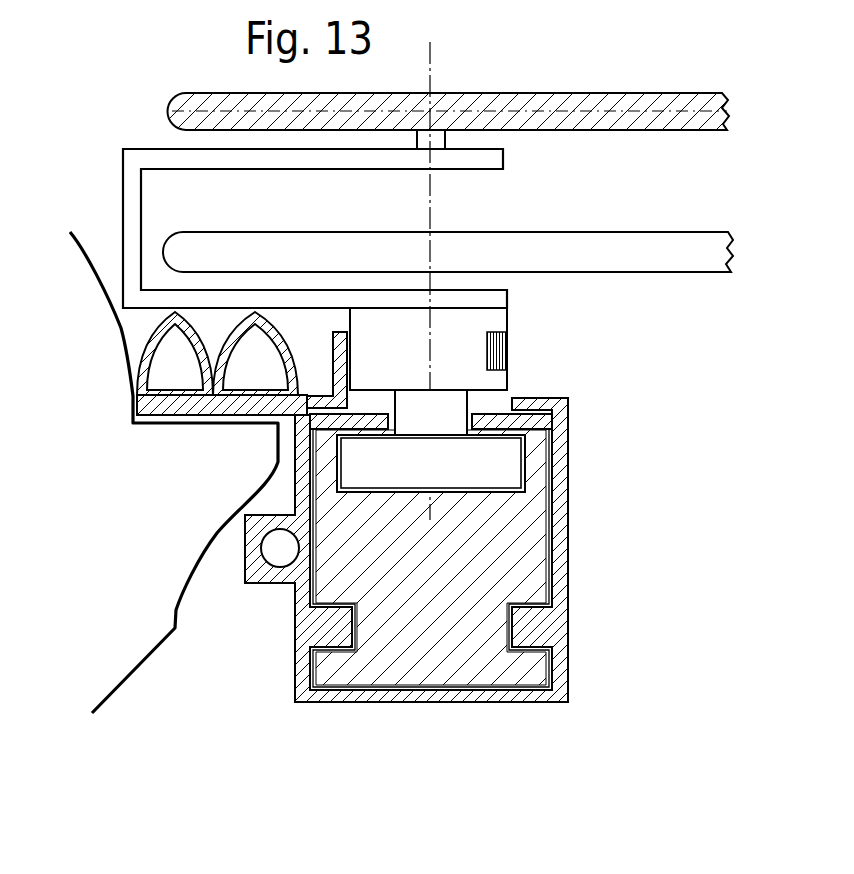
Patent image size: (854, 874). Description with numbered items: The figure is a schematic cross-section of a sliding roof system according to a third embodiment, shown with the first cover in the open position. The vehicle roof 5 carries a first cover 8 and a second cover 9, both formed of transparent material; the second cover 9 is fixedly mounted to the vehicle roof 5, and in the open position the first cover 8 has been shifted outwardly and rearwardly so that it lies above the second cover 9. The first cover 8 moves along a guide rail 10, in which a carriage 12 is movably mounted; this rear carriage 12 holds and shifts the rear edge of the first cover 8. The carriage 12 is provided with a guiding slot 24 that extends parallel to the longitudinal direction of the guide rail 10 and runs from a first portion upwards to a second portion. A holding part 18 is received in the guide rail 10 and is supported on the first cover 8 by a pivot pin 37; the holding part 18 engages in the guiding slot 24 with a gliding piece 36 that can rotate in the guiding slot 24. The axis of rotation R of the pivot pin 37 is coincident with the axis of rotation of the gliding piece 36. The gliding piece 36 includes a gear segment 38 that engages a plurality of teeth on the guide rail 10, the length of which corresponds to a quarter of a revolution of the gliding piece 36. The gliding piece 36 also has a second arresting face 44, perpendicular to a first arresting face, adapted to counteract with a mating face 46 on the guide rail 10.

The vehicle roof 5 is at (77, 236).
The first cover 8 is at (670, 110).
The second cover 9 is at (672, 248).
The guide rail 10 is at (568, 544).
The carriage 12 is at (532, 668).
The holding part 18 is at (126, 178).
The guiding slot 24 is at (510, 438).
The gliding piece 36 is at (512, 456).
The pivot pin 37 is at (437, 138).
The gear segment 38 is at (503, 348).
The second arresting face 44 is at (346, 324).
The mating face 46 is at (328, 342).
The axis of rotation R is at (432, 180).